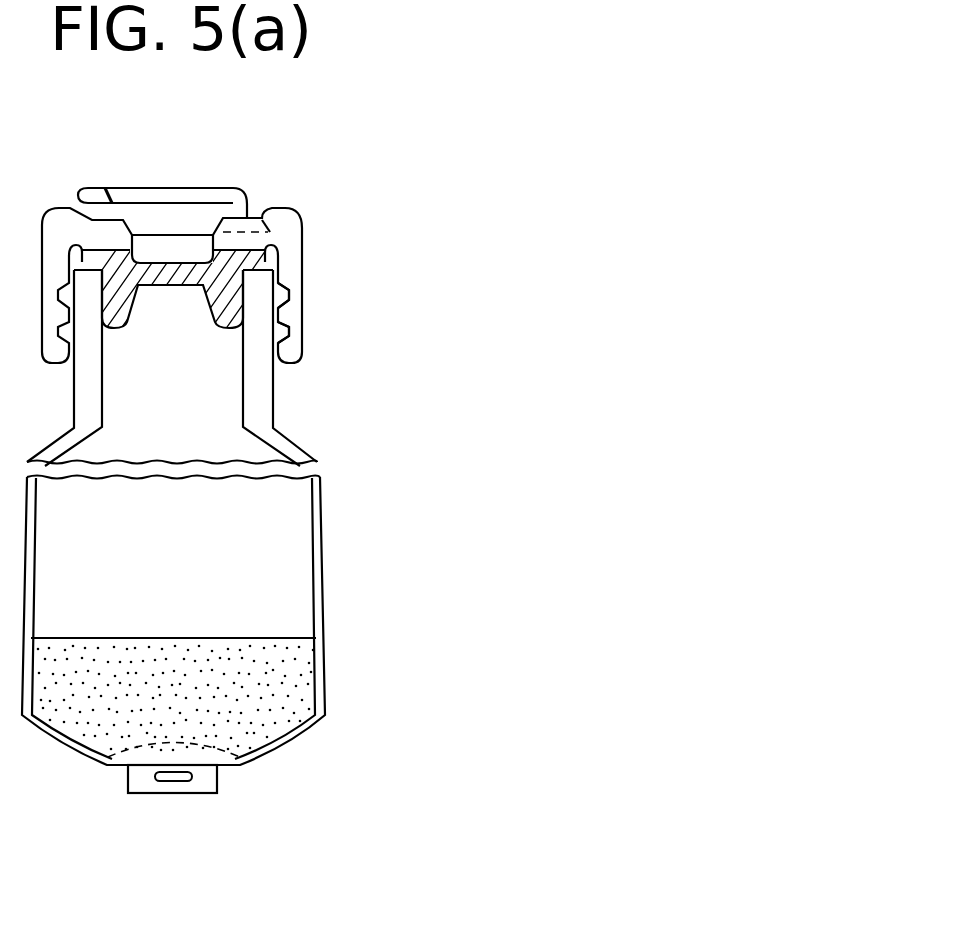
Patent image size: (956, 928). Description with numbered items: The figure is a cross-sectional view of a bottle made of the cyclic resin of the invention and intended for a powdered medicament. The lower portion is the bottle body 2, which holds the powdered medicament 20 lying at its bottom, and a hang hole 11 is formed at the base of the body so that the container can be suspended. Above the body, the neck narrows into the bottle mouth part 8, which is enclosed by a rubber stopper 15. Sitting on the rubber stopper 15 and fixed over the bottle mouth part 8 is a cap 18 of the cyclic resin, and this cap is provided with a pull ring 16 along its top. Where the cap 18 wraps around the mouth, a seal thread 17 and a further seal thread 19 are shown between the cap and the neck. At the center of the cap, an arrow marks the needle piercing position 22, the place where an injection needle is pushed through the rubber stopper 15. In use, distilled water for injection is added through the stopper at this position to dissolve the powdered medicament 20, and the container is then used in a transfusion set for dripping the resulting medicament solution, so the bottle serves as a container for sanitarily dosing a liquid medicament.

The injection needle piercing position 22 is at (167, 260).
The pull ring 16 is at (181, 197).
The cap 18 is at (281, 230).
The rubber stopper 15 is at (252, 262).
The seal thread 17 is at (266, 333).
The seal thread 19 is at (290, 348).
The bottle mouth part 8 is at (250, 397).
The bottle body 2 is at (335, 597).
The powdered medicament 20 is at (265, 680).
The hang hole 11 is at (180, 780).